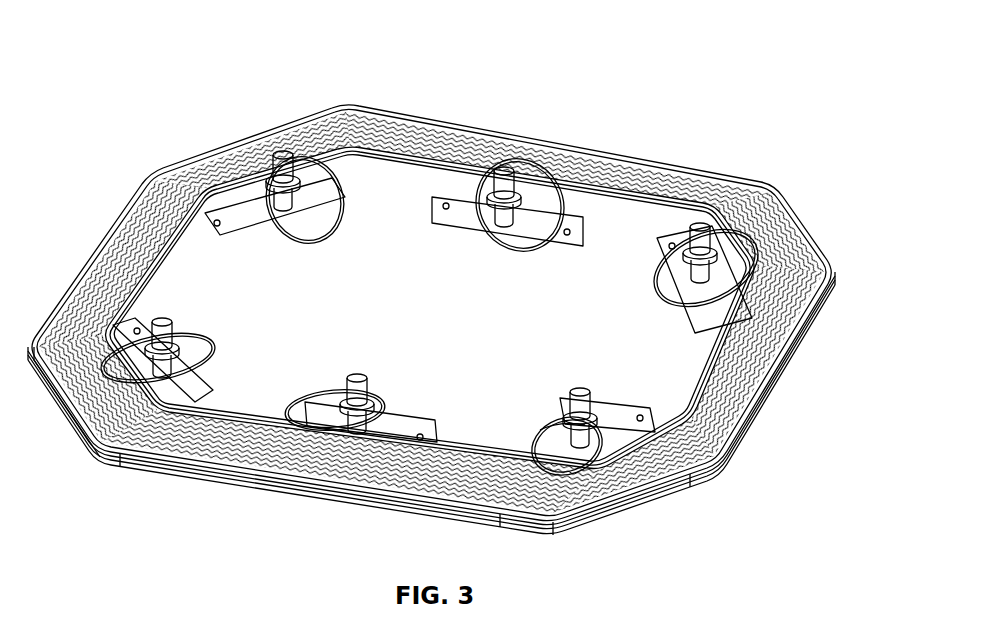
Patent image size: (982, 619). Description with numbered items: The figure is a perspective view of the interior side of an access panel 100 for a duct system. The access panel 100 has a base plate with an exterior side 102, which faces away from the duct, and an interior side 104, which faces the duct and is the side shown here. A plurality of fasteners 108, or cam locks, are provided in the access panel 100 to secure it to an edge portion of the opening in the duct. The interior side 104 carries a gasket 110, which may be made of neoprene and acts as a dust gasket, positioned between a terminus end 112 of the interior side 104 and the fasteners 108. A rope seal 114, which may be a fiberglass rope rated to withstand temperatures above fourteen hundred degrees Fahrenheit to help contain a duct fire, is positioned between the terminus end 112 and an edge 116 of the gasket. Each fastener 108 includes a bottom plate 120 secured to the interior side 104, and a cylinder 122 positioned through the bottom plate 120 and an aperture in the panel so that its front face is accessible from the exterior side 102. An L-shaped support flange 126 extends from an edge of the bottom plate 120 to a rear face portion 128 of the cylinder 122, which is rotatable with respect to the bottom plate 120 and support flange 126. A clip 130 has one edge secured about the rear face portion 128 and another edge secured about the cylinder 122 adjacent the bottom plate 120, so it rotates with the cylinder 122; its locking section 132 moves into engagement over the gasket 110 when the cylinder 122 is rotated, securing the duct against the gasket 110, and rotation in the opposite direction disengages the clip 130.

The access panel 100 is at (130, 56).
The exterior side 102 is at (519, 537).
The interior side 104 is at (401, 302).
The fasteners 108 is at (162, 332).
The gasket 110 is at (127, 250).
The terminus end 112 is at (52, 408).
The rope seal 114 is at (147, 172).
The edge of the gasket 116 is at (75, 287).
The bottom plate 120 is at (568, 242).
The cylinder 122 is at (506, 167).
The support flange 126 is at (693, 467).
The rear face portion 128 is at (608, 392).
The clip 130 is at (533, 437).
The locking section 132 is at (533, 438).